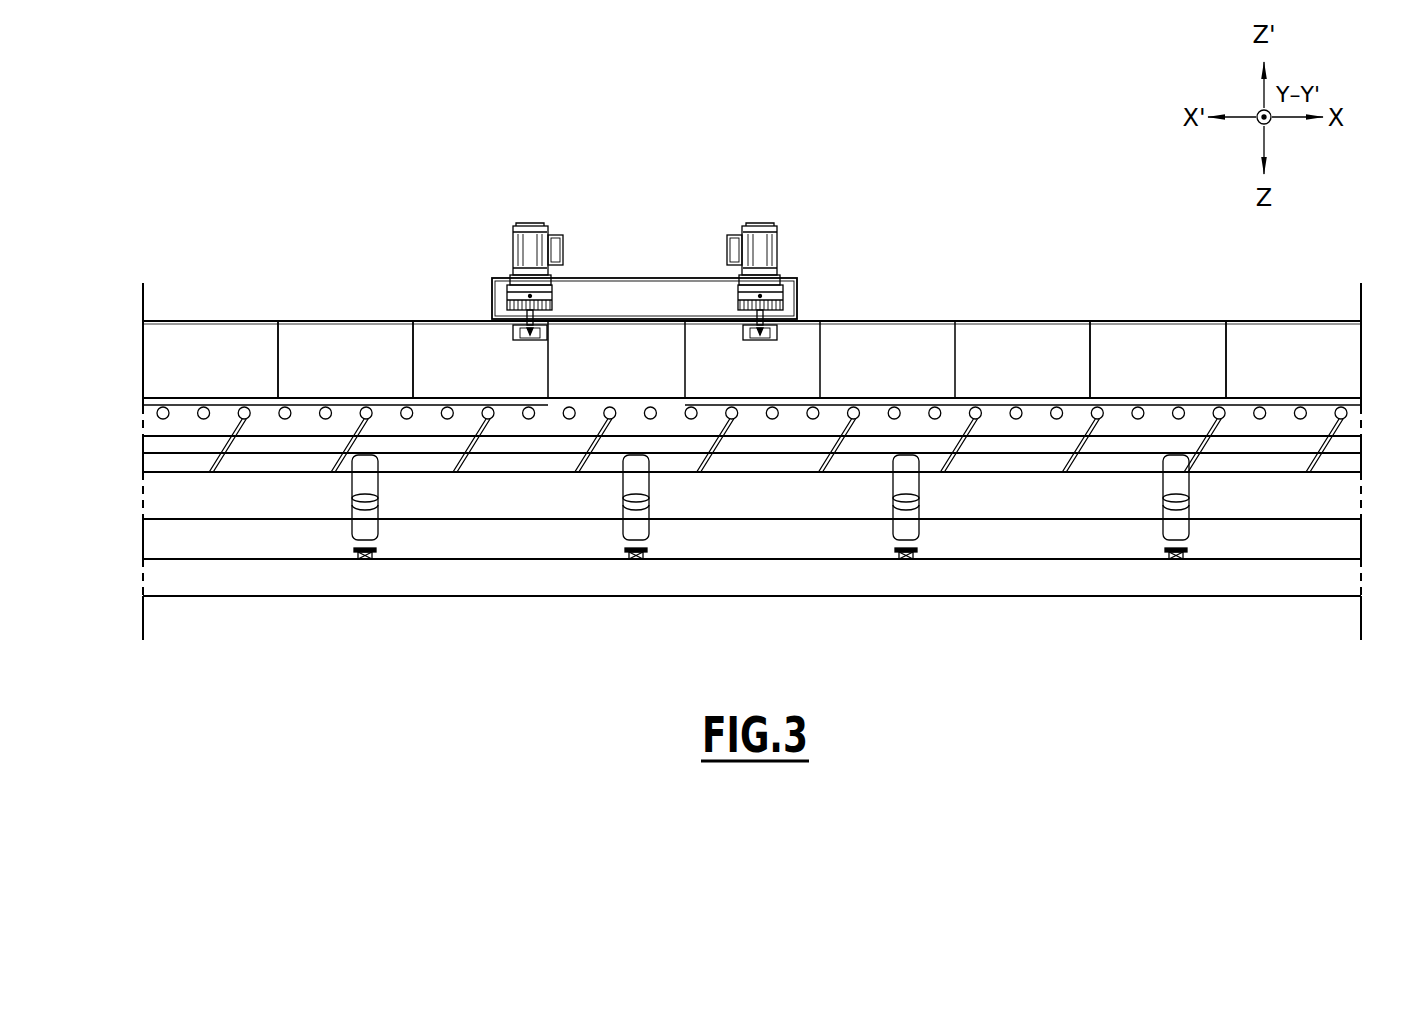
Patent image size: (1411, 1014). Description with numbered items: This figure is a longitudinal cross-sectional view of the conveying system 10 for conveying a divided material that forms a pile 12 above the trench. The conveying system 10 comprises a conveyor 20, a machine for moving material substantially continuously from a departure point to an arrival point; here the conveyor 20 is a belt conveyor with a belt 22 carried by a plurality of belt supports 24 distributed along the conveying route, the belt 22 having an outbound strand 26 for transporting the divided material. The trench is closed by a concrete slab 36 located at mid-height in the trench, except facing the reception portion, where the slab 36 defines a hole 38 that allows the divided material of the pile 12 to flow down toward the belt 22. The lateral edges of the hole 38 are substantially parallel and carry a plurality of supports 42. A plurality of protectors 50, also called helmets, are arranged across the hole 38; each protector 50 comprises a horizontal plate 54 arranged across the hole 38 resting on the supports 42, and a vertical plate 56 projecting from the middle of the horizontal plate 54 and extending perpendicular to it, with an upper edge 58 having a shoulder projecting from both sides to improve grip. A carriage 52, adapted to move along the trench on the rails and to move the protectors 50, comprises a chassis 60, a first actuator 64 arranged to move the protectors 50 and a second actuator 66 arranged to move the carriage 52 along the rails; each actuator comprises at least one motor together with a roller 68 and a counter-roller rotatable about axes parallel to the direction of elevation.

The conveying system 10 is at (902, 127).
The pile 12 is at (752, 265).
The conveyor 20 is at (567, 573).
The belt 22 is at (826, 553).
The belt supports 24 is at (910, 543).
The outbound strand 26 is at (1119, 569).
The slab 36 is at (1350, 426).
The hole 38 is at (1279, 412).
The supports 42 is at (935, 406).
The protectors 50 is at (1151, 358).
The carriage 52 is at (666, 276).
The horizontal plate 54 is at (382, 395).
The vertical plate 56 is at (360, 368).
The upper edge 58 is at (336, 319).
The chassis 60 is at (614, 280).
The first actuator 64 is at (531, 219).
The second actuator 66 is at (779, 224).
The roller 68 is at (776, 337).